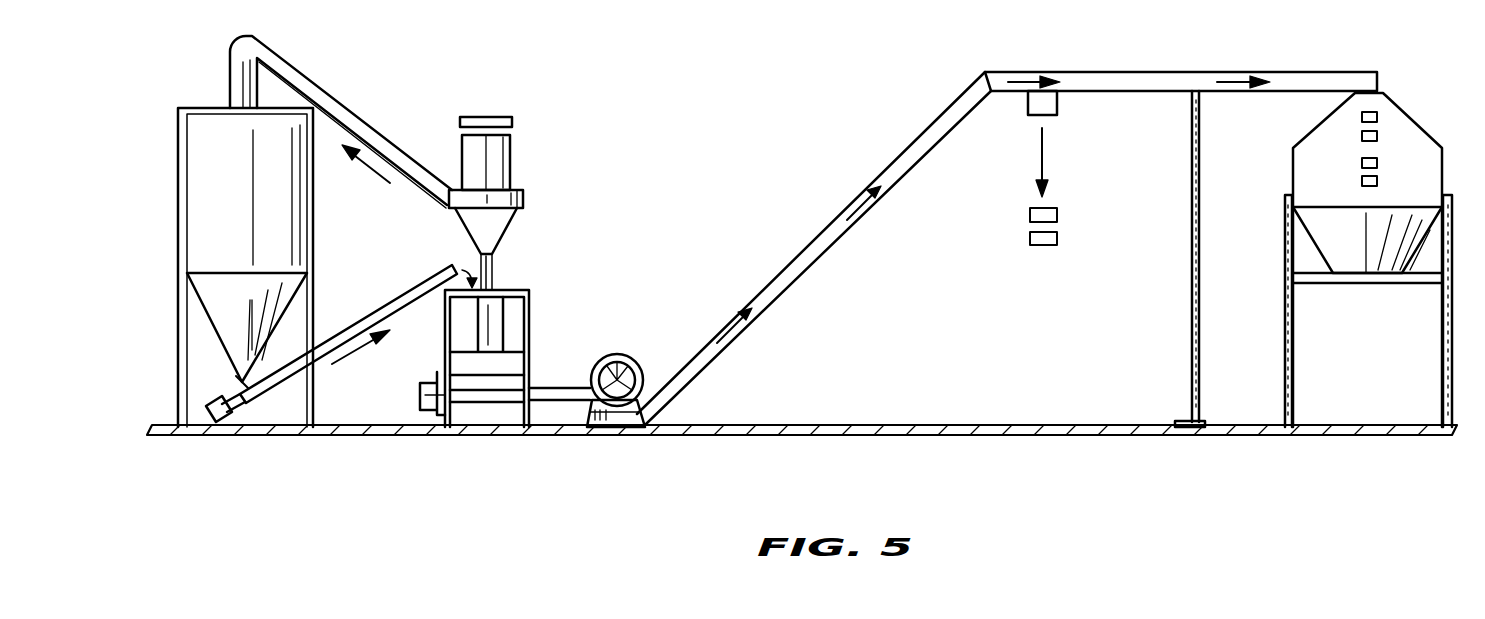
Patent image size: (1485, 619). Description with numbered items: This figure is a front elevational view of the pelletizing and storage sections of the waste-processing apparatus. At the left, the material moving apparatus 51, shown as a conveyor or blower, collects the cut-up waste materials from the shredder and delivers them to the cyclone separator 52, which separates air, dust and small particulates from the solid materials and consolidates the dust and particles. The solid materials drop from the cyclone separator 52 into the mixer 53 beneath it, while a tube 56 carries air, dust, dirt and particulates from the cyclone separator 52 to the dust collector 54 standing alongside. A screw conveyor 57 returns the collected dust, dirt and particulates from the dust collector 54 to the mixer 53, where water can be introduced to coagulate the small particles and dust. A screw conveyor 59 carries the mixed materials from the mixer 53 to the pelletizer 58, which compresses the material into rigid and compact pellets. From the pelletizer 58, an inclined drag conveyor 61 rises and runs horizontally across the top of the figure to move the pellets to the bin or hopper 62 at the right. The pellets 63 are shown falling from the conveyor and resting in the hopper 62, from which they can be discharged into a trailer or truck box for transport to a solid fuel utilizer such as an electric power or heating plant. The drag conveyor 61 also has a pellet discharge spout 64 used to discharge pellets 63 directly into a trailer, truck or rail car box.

The material moving apparatus 51 is at (488, 118).
The cyclone separator 52 is at (506, 167).
The mixer 53 is at (512, 300).
The dust collector 54 is at (213, 128).
The tube 56 is at (373, 130).
The screw conveyor 57 is at (378, 318).
The pelletizer 58 is at (618, 354).
The screw conveyor 59 is at (565, 388).
The drag conveyor 61 is at (1152, 82).
The bin or hopper 62 is at (1312, 174).
The pellets 63 is at (1034, 217).
The pellet discharge spout 64 is at (1053, 97).